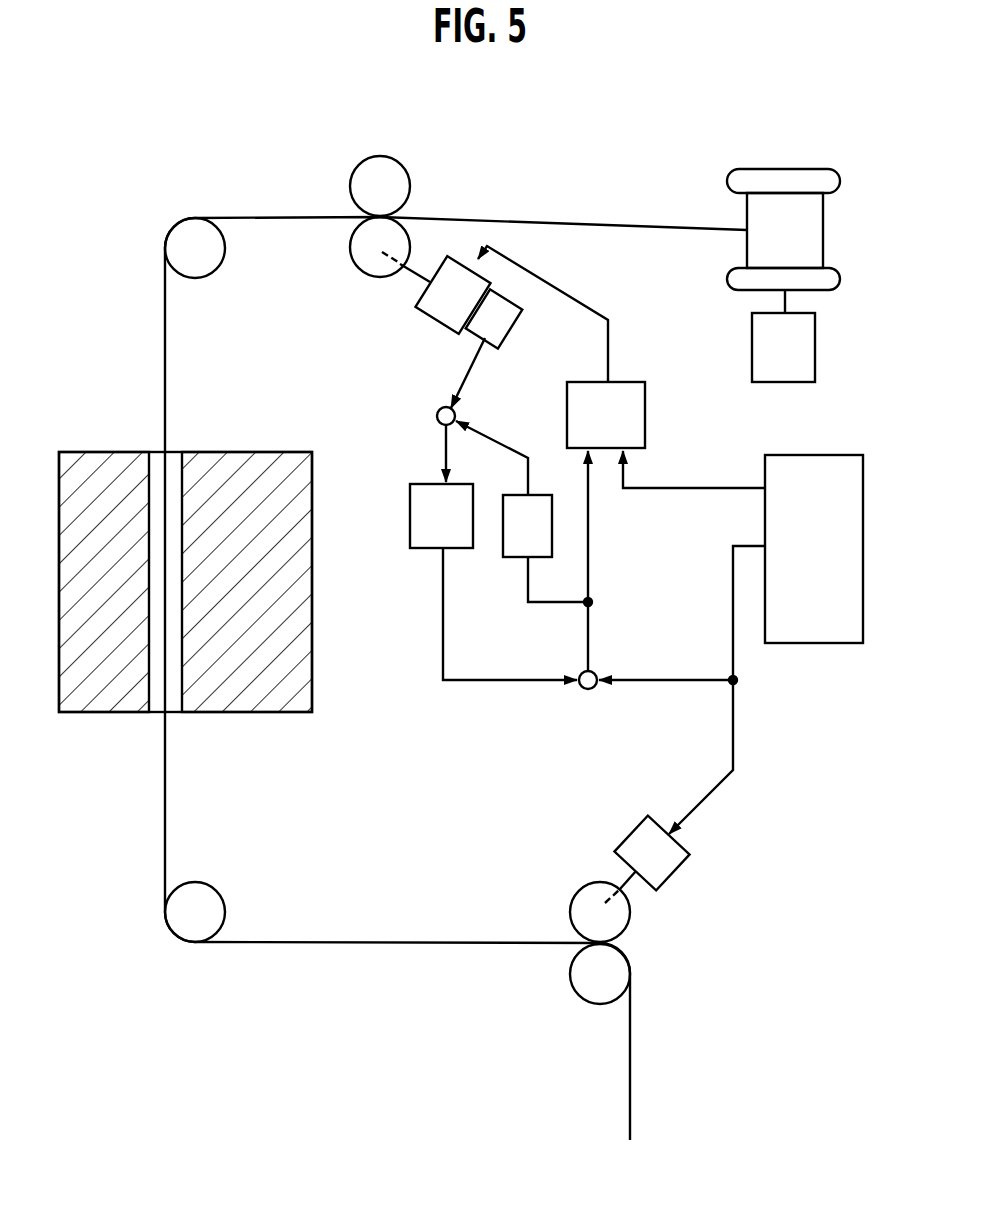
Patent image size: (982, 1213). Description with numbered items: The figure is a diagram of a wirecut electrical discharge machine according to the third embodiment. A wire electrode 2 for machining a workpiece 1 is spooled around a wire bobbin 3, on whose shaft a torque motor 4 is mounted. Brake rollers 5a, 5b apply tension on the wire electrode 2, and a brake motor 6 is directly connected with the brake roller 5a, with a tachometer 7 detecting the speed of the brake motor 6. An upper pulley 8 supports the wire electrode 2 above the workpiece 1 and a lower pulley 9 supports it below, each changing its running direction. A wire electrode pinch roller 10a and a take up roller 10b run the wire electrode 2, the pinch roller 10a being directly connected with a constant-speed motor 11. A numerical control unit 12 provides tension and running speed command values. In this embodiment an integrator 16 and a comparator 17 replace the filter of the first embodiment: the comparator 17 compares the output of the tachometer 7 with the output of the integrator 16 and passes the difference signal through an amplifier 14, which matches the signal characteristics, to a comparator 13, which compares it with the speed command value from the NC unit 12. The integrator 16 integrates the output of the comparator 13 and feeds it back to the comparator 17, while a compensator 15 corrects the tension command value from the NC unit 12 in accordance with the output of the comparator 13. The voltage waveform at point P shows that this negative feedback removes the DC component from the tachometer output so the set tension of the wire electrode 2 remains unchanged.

The workpiece 1 is at (312, 638).
The wire electrode 2 is at (640, 222).
The wire bobbin 3 is at (824, 215).
The torque motor 4 is at (815, 337).
The brake roller 5a is at (357, 270).
The brake roller 5b is at (409, 172).
The brake motor 6 is at (428, 320).
The tachometer 7 is at (520, 330).
The upper pulley 8 is at (224, 262).
The lower pulley 9 is at (218, 893).
The wire electrode pinch roller 10a is at (571, 905).
The take up roller 10b is at (630, 965).
The constant-speed motor 11 is at (680, 870).
The numerical control unit 12 is at (805, 643).
The comparator 13 is at (585, 690).
The amplifier 14 is at (410, 513).
The compensator 15 is at (645, 400).
The integrator 16 is at (512, 557).
The comparator 17 is at (437, 418).
The point P is at (590, 601).